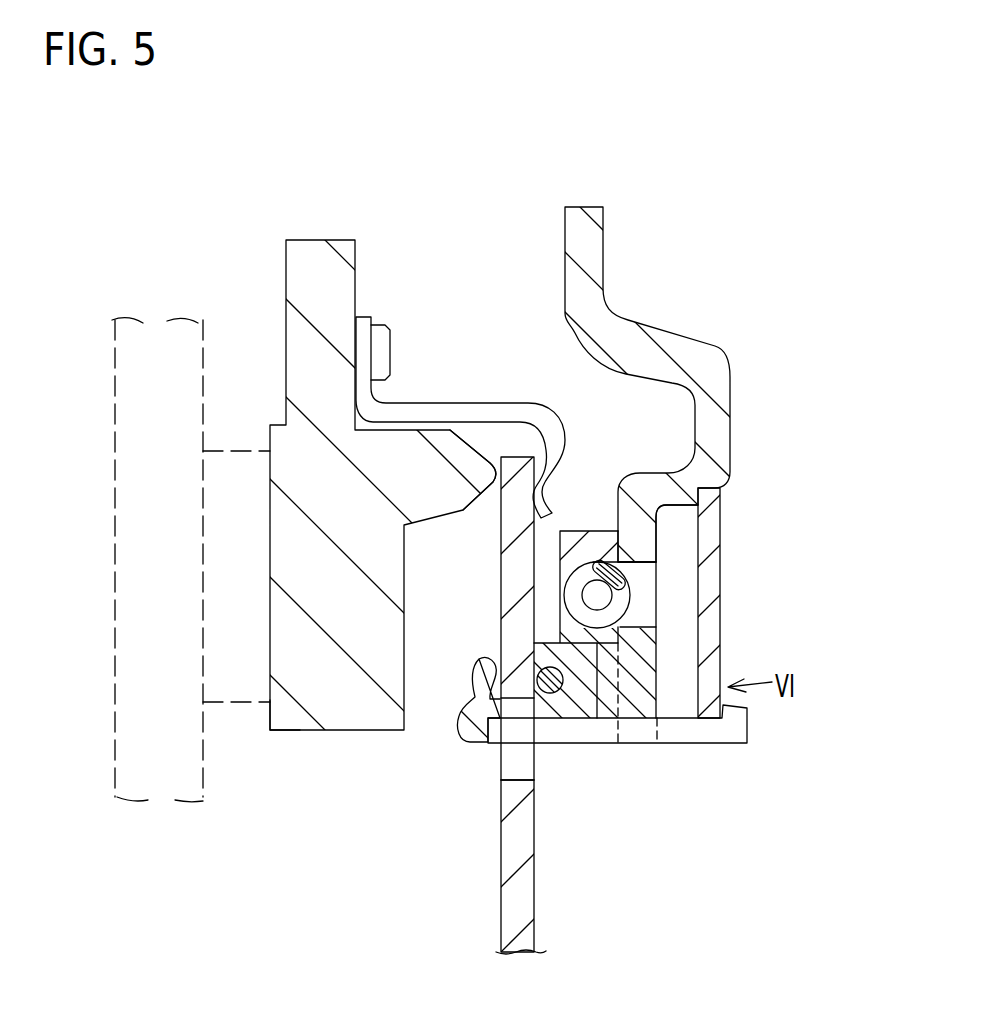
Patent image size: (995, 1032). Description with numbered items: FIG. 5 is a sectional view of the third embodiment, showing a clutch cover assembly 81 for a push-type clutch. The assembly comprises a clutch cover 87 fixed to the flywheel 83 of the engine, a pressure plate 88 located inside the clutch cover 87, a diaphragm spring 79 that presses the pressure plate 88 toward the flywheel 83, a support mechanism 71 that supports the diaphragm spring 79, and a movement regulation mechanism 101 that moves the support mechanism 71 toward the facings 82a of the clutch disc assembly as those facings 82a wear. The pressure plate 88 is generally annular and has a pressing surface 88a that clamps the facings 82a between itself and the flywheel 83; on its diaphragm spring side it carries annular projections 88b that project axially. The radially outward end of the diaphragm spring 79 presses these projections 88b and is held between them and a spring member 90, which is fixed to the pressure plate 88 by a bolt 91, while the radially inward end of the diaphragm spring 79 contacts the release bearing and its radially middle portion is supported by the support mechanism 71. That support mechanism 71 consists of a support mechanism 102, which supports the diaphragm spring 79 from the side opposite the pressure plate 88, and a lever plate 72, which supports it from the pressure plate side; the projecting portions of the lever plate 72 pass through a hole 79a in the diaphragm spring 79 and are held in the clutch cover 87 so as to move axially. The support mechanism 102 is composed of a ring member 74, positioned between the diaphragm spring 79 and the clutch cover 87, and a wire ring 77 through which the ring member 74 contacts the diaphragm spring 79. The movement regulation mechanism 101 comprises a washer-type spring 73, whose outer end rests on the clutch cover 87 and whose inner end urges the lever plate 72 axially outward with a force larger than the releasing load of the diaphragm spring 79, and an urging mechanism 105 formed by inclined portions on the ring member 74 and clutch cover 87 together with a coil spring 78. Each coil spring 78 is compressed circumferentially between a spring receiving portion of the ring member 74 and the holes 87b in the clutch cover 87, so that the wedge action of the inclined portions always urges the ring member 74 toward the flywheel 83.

The support mechanism 71 is at (675, 815).
The lever plate 72 is at (677, 735).
The washer-type spring 73 is at (707, 607).
The ring member 74 is at (577, 690).
The wire ring 77 is at (546, 693).
The coil spring 78 is at (595, 560).
The diaphragm spring 79 is at (520, 902).
The hole 79a is at (517, 777).
The clutch cover assembly 81 is at (712, 227).
The facings 82a is at (203, 703).
The flywheel 83 is at (115, 650).
The clutch cover 87 is at (712, 363).
The holes 87b is at (633, 563).
The pressure plate 88 is at (357, 703).
The pressing surface 88a is at (270, 720).
The annular projections 88b is at (458, 497).
The spring member 90 is at (482, 408).
The bolt 91 is at (385, 353).
The movement regulation mechanism 101 is at (848, 635).
The support mechanism 102 is at (570, 783).
The urging mechanism 105 is at (822, 635).